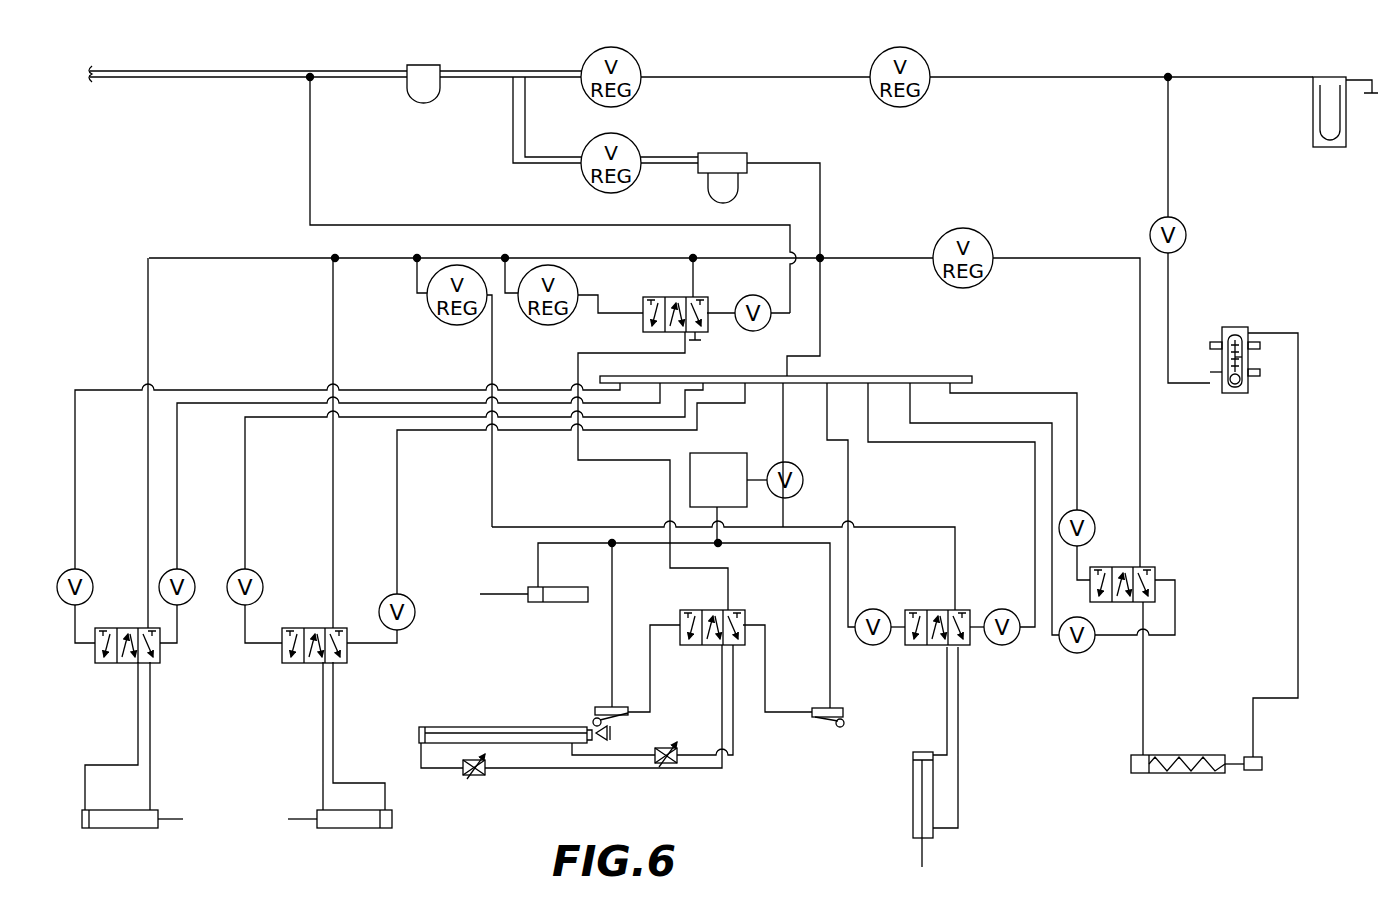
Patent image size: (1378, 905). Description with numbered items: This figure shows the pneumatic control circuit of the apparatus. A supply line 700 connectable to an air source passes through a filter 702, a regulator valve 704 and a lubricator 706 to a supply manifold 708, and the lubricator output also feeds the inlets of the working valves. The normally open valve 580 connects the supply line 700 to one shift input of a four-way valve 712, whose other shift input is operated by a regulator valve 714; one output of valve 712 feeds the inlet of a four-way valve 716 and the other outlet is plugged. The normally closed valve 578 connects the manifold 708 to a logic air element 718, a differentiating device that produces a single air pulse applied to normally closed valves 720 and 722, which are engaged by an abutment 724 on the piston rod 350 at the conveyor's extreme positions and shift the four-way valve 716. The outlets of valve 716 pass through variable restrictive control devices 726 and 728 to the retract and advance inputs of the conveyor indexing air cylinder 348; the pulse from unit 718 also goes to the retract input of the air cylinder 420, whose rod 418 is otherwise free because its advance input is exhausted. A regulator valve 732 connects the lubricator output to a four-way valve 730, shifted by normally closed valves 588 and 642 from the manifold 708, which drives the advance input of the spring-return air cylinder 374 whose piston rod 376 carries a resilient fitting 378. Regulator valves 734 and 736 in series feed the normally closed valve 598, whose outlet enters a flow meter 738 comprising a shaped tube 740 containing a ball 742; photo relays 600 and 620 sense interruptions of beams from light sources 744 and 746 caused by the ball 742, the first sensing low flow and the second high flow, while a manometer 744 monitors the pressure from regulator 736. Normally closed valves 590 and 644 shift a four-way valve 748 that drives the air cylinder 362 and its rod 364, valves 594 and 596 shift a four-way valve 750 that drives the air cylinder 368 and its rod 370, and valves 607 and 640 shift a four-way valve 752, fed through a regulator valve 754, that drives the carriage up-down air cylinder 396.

The supply line 700 is at (336, 70).
The filter 702 is at (438, 70).
The regulator valve 704 is at (626, 140).
The lubricator 706 is at (730, 153).
The supply manifold 708 is at (960, 376).
The four-way valve 712 is at (705, 303).
The regulator valve 714 is at (562, 320).
The four-way valve 716 is at (742, 612).
The logic air element 718 is at (710, 458).
The normally closed valve 720 is at (602, 706).
The normally closed valve 722 is at (845, 708).
The abutment 724 is at (622, 730).
The variable restrictive control device 726 is at (662, 768).
The variable restrictive control device 728 is at (463, 780).
The four-way valve 730 is at (1150, 567).
The regulator valve 732 is at (982, 238).
The regulator valve 734 is at (620, 52).
The regulator valve 736 is at (920, 57).
The flow meter 738 is at (1232, 395).
The tube 740 is at (1242, 360).
The ball 742 is at (1248, 388).
The beam light source 744 is at (1313, 125).
The beam light source 746 is at (1258, 342).
The four-way valve 748 is at (162, 660).
The four-way valve 750 is at (345, 628).
The four-way valve 752 is at (966, 612).
The regulator valve 754 is at (432, 318).
The normally closed valve 578 is at (798, 486).
The normally open valve 580 is at (758, 332).
The normally closed valve 588 is at (1074, 653).
The normally closed valve 590 is at (112, 560).
The normally closed valve 594 is at (410, 603).
The normally closed valve 596 is at (280, 560).
The normally closed valve 598 is at (1186, 236).
The photo relay 600 is at (1215, 372).
The normally closed valve 607 is at (874, 609).
The photo relay 620 is at (1216, 342).
The normally closed valve 640 is at (1001, 648).
The normally closed valve 642 is at (1090, 532).
The normally closed valve 644 is at (212, 560).
The conveyor indexing air cylinder 348 is at (490, 727).
The piston rod 350 is at (588, 745).
The air cylinder 362 is at (116, 814).
The piston rod 364 is at (168, 818).
The air cylinder 368 is at (345, 830).
The piston rod 370 is at (300, 818).
The air cylinder 374 is at (1162, 755).
The piston rod 376 is at (1237, 772).
The resilient fitting 378 is at (1258, 772).
The carriage up-down air cylinder 396 is at (935, 790).
The piston rod 418 is at (490, 597).
The air cylinder 420 is at (555, 604).